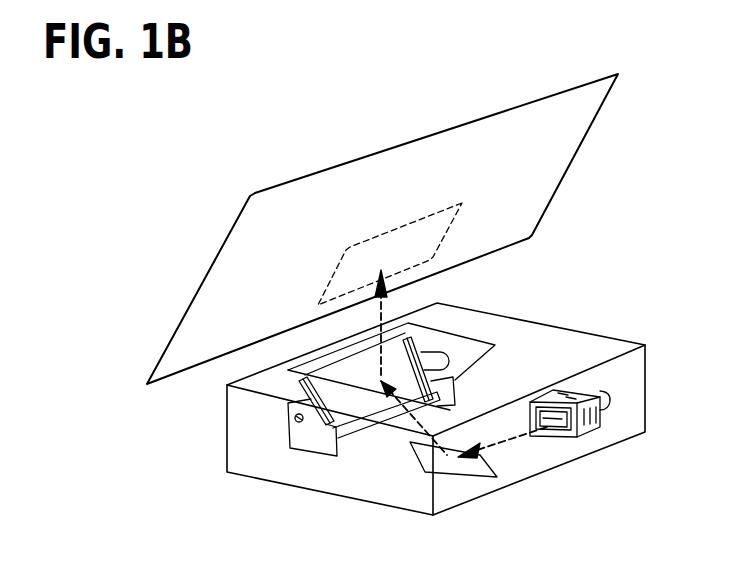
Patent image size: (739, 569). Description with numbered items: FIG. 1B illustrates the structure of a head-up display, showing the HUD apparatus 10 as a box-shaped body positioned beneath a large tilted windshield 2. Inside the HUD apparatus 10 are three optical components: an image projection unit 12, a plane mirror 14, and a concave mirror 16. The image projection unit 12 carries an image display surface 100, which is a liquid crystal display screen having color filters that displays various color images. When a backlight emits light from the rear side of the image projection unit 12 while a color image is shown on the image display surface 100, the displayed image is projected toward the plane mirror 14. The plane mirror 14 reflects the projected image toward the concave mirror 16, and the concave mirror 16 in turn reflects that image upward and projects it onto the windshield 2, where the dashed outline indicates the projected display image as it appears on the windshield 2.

The windshield 2 is at (570, 162).
The HUD apparatus 10 is at (568, 332).
The image projection unit 12 is at (597, 432).
The plane mirror 14 is at (467, 477).
The concave mirror 16 is at (358, 428).
The image display surface 100 is at (561, 424).